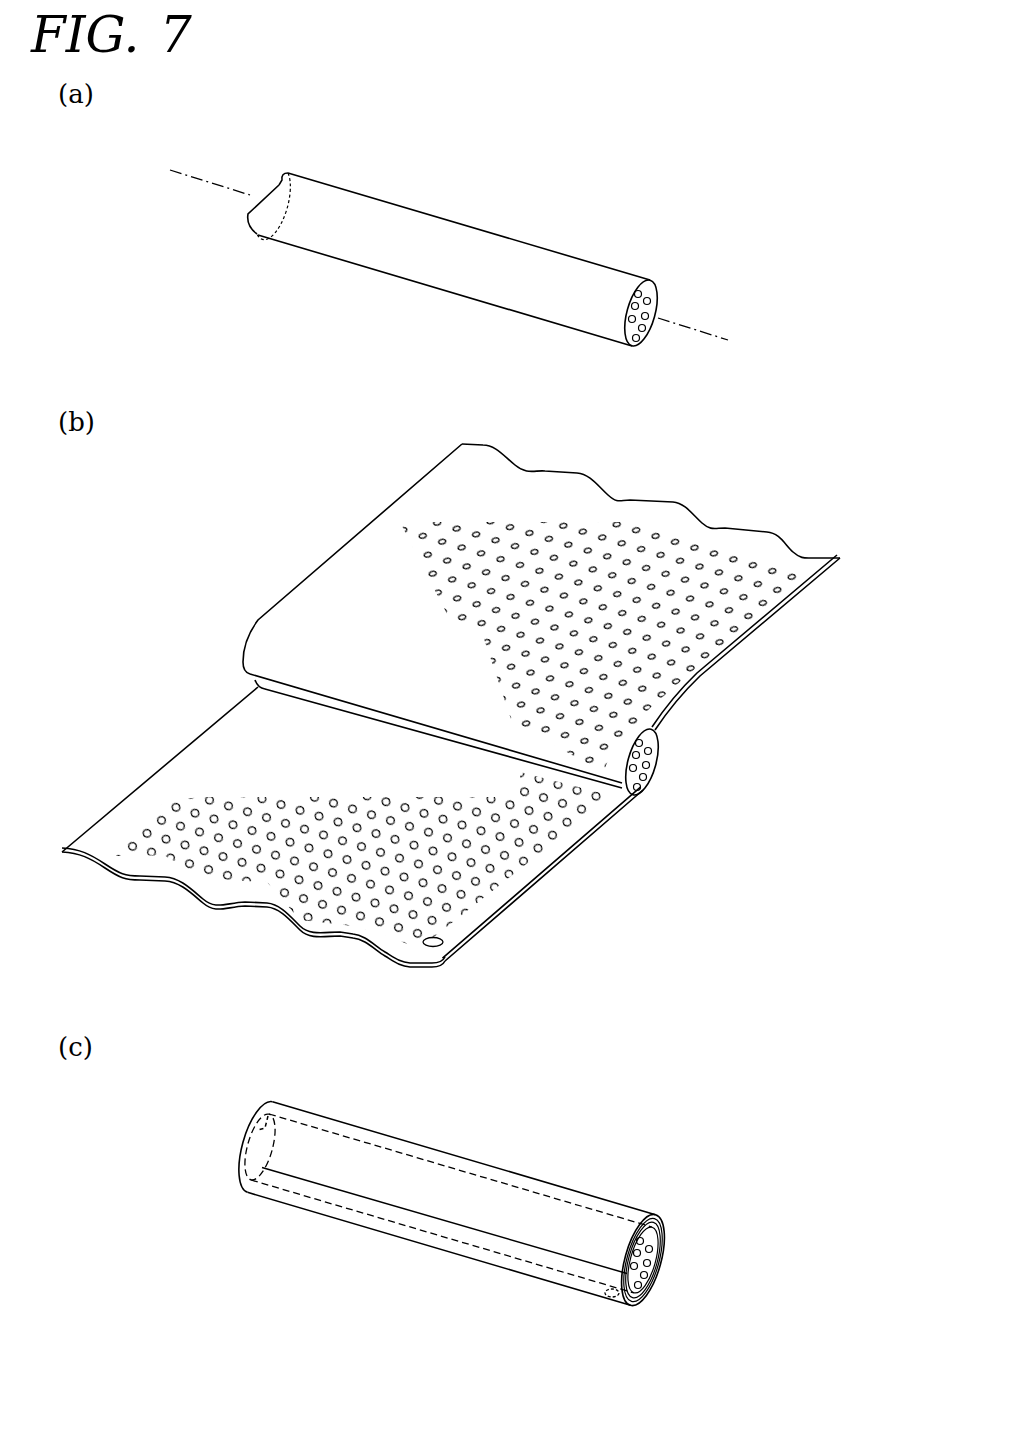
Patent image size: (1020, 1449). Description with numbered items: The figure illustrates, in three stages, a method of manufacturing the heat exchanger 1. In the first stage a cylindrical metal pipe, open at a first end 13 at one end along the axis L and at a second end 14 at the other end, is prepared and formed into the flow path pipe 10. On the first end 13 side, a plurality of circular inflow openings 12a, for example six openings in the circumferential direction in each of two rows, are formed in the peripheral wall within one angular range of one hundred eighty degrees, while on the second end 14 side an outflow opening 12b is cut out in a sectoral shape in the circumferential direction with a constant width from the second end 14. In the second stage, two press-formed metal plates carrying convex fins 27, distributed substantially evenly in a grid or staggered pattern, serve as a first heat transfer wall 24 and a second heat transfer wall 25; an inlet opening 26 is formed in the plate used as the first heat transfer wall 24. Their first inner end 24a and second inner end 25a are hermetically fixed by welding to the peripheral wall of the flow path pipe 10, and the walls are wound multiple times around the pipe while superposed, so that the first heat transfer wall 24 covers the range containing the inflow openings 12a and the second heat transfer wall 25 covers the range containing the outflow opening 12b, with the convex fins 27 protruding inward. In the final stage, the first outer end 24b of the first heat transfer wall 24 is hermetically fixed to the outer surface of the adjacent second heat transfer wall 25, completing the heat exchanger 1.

The heat exchanger 1 is at (539, 1154).
The flow path pipe 10 is at (420, 270).
The inflow openings 12a is at (638, 330).
The outflow opening 12b is at (281, 182).
The first end 13 is at (653, 283).
The second end 14 is at (248, 214).
The first heat transfer wall 24 is at (528, 878).
The first inner end 24a is at (657, 740).
The first outer end 24b is at (410, 1210).
The second heat transfer wall 25 is at (747, 626).
The second inner end 25a is at (292, 688).
The inlet opening 26 is at (445, 943).
The convex fins 27 is at (598, 588).
The axis L is at (459, 266).